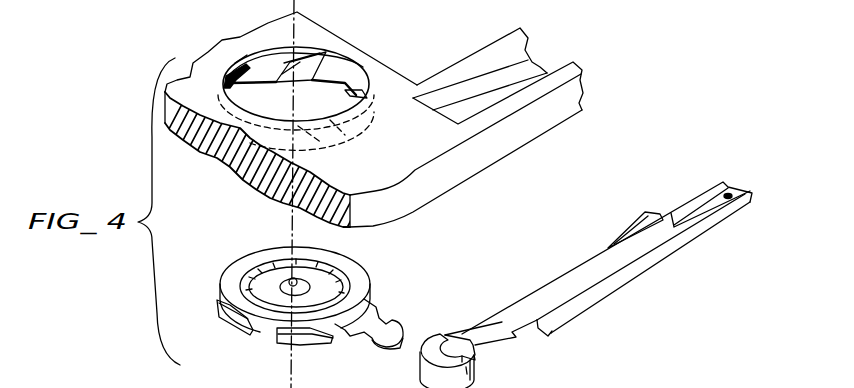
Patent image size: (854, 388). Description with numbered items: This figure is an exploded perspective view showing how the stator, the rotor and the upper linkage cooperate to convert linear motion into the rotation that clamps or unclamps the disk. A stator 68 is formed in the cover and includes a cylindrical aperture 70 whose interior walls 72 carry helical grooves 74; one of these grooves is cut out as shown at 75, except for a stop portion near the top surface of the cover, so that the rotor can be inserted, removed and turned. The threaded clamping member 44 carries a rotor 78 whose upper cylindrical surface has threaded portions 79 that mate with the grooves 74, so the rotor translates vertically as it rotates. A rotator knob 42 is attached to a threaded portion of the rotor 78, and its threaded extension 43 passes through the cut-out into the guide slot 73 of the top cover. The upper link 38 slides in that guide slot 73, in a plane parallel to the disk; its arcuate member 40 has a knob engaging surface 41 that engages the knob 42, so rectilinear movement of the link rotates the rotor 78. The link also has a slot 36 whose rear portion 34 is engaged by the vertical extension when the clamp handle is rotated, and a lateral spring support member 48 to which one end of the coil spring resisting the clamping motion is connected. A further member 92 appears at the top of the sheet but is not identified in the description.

The rear portion of slot 34 is at (727, 196).
The slot 36 is at (696, 212).
The upper link 38 is at (541, 290).
The arcuate member 40 is at (470, 385).
The knob engaging surface 41 is at (446, 337).
The rotator knob 42 is at (374, 352).
The threaded extension 43 is at (381, 318).
The threaded clamping member 44 is at (378, 263).
The lateral spring support member 48 is at (552, 322).
The stator 68 is at (187, 82).
The cylindrical aperture 70 is at (272, 107).
The interior walls 72 is at (250, 75).
The guide slot 73 is at (547, 61).
The helical grooves 74 is at (350, 73).
The cut-out of helical groove 75 is at (373, 147).
The rotor 78 is at (238, 272).
The threaded portions 79 is at (280, 349).
The member 92 is at (555, 0).